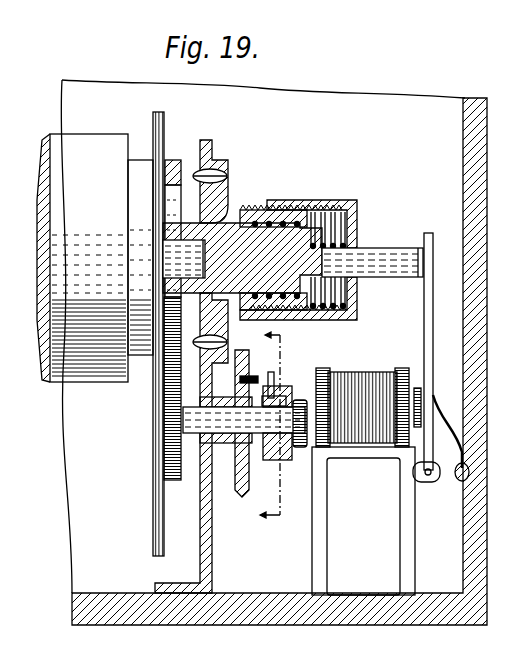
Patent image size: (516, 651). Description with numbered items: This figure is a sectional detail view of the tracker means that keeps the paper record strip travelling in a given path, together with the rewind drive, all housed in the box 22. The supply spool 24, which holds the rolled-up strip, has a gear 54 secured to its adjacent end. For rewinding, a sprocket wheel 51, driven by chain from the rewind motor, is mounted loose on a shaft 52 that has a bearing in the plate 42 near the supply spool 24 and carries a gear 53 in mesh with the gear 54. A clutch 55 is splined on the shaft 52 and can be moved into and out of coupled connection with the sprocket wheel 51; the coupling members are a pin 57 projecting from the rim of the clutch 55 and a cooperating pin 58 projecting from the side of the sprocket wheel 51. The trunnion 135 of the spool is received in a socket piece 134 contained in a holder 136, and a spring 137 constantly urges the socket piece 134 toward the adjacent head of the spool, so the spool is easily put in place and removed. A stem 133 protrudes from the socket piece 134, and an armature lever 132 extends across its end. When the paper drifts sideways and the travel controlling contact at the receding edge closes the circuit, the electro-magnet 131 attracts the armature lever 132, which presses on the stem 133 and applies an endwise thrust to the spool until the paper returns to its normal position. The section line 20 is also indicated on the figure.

The box 22 is at (436, 108).
The supply spool 24 is at (142, 345).
The gear 54 is at (168, 360).
The gear 53 is at (165, 462).
The plate 42 is at (207, 147).
The socket piece 134 is at (228, 232).
The trunnion 135 is at (160, 256).
The holder 136 is at (294, 200).
The spring 137 is at (334, 205).
The stem 133 is at (388, 252).
The armature lever 132 is at (424, 316).
The electro-magnet 131 is at (350, 370).
The sprocket wheel 51 is at (242, 460).
The shaft 52 is at (200, 446).
The clutch 55 is at (276, 460).
The pin 57 is at (274, 380).
The pin 58 is at (250, 376).
The section line 20 is at (259, 425).